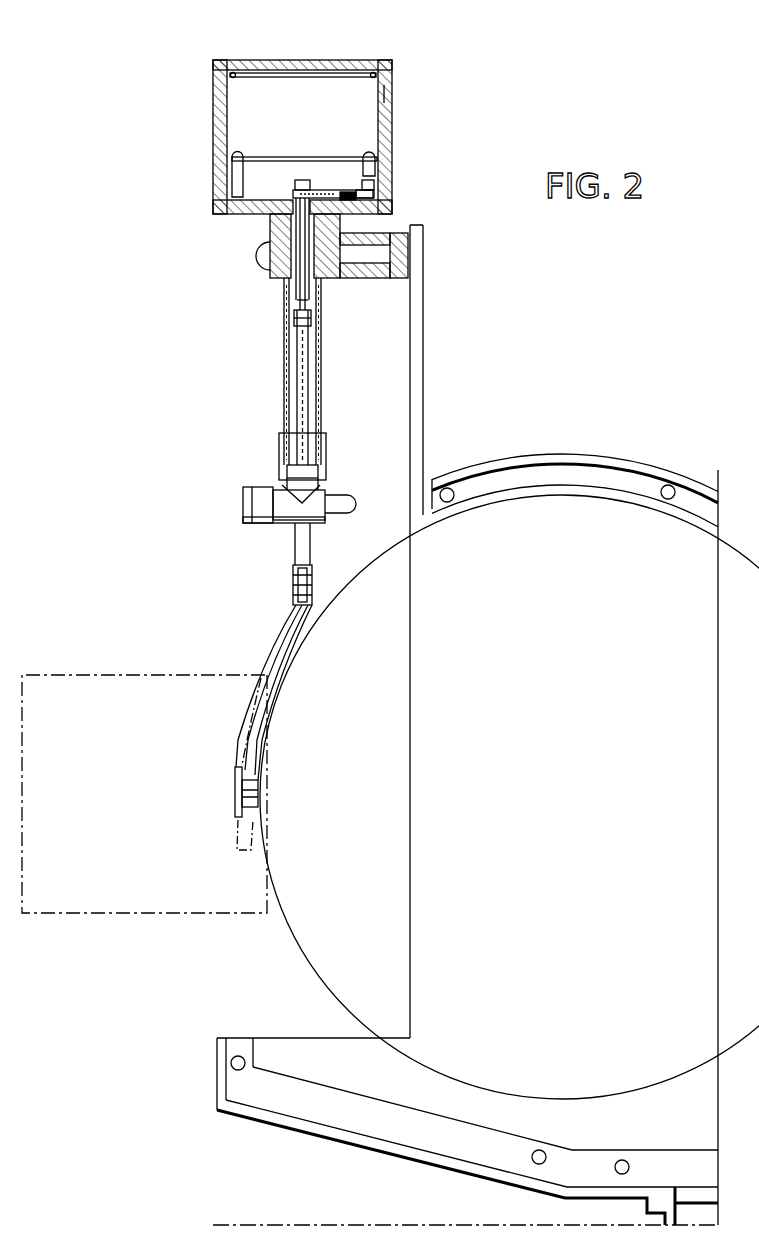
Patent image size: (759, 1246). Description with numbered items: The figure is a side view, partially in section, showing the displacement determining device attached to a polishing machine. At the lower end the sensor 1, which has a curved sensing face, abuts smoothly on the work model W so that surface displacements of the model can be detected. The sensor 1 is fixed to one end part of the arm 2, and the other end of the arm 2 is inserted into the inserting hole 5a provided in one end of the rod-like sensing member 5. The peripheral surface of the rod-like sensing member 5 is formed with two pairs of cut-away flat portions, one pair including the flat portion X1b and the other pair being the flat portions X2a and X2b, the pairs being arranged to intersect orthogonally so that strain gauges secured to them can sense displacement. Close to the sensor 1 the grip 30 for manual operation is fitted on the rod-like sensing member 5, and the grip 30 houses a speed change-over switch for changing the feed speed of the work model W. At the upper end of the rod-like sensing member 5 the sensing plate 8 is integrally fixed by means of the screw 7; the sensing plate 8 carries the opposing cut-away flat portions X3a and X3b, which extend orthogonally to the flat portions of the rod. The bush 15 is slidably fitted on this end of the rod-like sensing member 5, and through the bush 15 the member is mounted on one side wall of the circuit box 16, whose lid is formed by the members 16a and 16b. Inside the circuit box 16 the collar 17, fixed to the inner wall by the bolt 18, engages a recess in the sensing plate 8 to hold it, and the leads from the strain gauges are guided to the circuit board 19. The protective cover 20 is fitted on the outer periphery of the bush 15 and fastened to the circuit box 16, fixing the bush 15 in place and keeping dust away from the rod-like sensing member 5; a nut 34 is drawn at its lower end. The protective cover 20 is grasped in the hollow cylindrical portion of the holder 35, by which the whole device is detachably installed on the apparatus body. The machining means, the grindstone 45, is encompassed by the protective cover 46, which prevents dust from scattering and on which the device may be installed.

The sensor 1 is at (233, 770).
The arm 2 is at (292, 625).
The rod-like sensing member 5 is at (311, 407).
The inserting hole 5a is at (312, 592).
The screw 7 is at (294, 184).
The sensing plate 8 is at (316, 190).
The bush 15 is at (291, 288).
The circuit box 16 is at (392, 163).
The cover plate 16a is at (322, 60).
The cover lining 16b is at (366, 61).
The collar 17 is at (378, 195).
The bolt 18 is at (374, 184).
The circuit board 19 is at (284, 152).
The protective cover 20 is at (321, 373).
The grip 30 is at (280, 502).
The sleeve nut 34 is at (326, 447).
The holder 35 is at (406, 255).
The grindstone 45 is at (686, 518).
The protective cover 46 is at (598, 468).
The work model W is at (163, 668).
The cut-away flat portion X1b is at (306, 325).
The cut-away flat portion X2a is at (306, 304).
The cut-away flat portion X2b is at (300, 305).
The cut-away flat portion X3a is at (344, 192).
The cut-away flat portion X3b is at (356, 200).